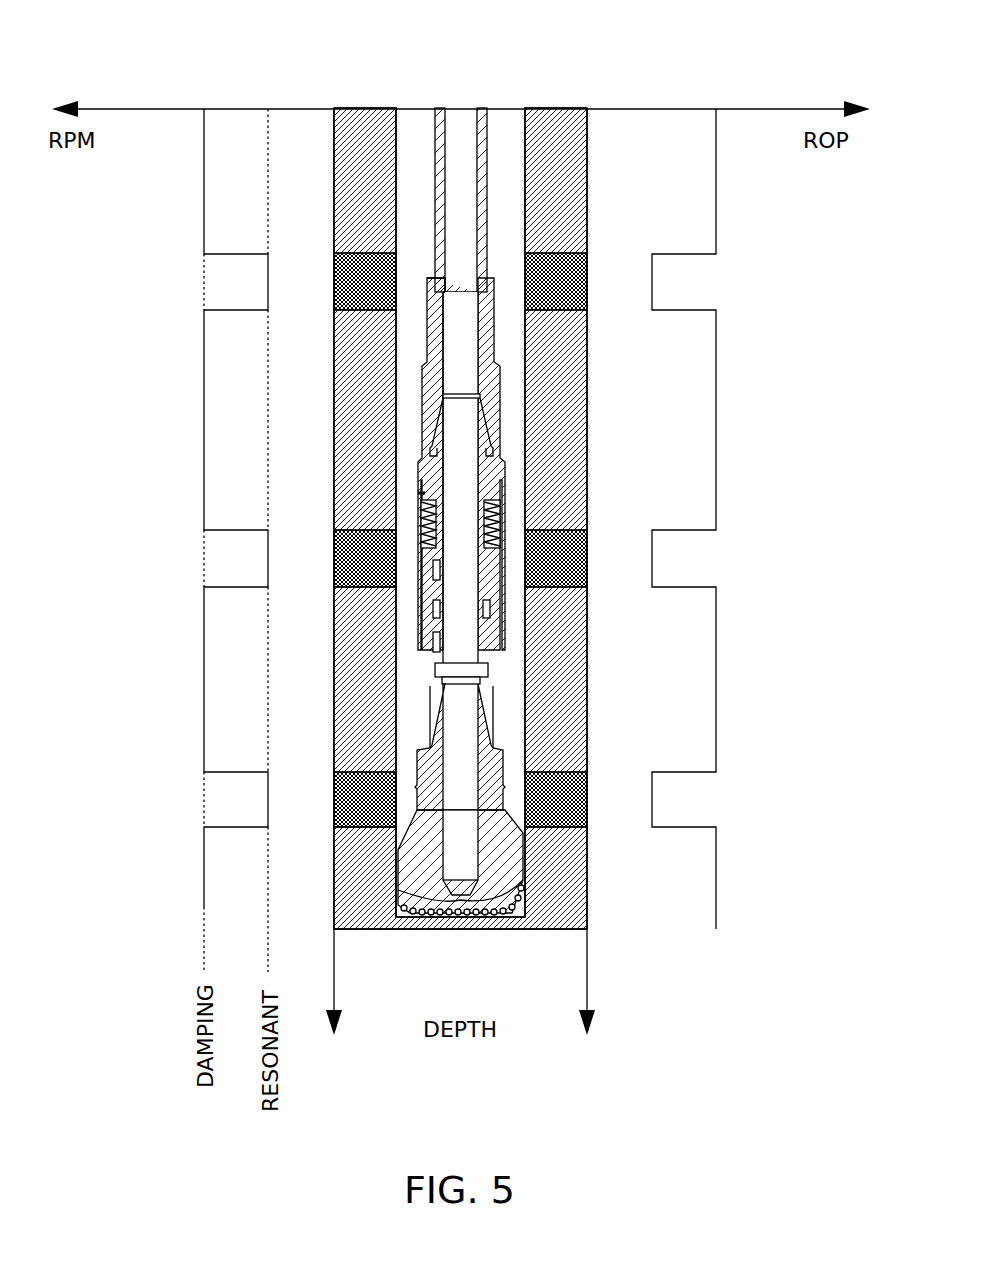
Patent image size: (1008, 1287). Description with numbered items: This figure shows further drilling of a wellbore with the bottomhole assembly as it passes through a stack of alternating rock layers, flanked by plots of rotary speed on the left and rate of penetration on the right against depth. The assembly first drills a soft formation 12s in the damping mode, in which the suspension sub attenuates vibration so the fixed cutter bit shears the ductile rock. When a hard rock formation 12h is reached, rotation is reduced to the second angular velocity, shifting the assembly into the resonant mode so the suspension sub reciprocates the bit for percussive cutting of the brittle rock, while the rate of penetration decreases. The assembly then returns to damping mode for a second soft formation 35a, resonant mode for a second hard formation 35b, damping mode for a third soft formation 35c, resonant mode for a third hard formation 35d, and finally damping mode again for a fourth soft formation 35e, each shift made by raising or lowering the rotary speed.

The soft formation 12s is at (372, 125).
The hard rock formation 12h is at (334, 259).
The second soft formation 35a is at (336, 390).
The second hard formation 35b is at (335, 549).
The third soft formation 35c is at (346, 653).
The third hard formation 35d is at (335, 788).
The fourth soft formation 35e is at (348, 876).